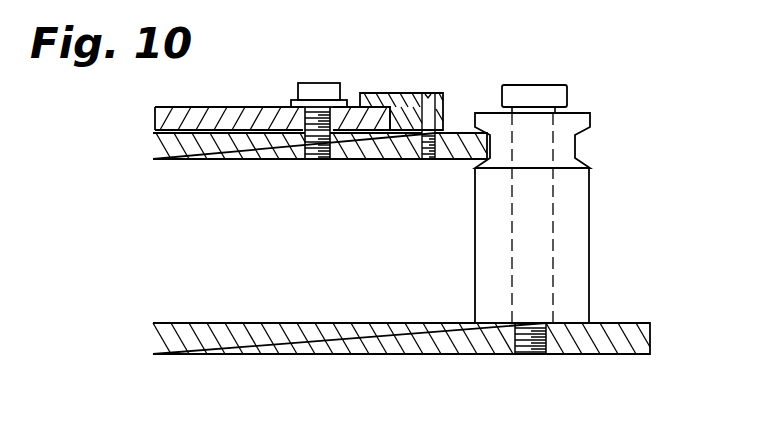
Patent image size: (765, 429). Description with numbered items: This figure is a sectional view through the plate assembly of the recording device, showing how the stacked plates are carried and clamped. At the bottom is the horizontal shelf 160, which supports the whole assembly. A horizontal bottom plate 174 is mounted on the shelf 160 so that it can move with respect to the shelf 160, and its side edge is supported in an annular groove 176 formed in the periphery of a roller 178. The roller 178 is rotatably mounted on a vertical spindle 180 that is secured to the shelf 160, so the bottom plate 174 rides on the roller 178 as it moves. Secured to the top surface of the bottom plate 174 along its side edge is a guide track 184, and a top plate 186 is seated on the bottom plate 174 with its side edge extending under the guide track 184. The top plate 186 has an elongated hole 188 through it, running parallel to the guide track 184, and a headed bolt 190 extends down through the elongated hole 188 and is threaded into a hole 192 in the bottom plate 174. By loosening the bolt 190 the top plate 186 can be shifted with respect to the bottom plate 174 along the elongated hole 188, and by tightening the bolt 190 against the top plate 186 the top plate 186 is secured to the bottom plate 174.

The horizontal shelf 160 is at (425, 345).
The bottom plate 174 is at (235, 152).
The annular groove 176 is at (577, 150).
The roller 178 is at (590, 248).
The vertical spindle 180 is at (545, 86).
The guide track 184 is at (393, 93).
The top plate 186 is at (188, 120).
The elongated hole 188 is at (303, 123).
The headed bolt 190 is at (320, 90).
The threaded hole 192 is at (295, 142).